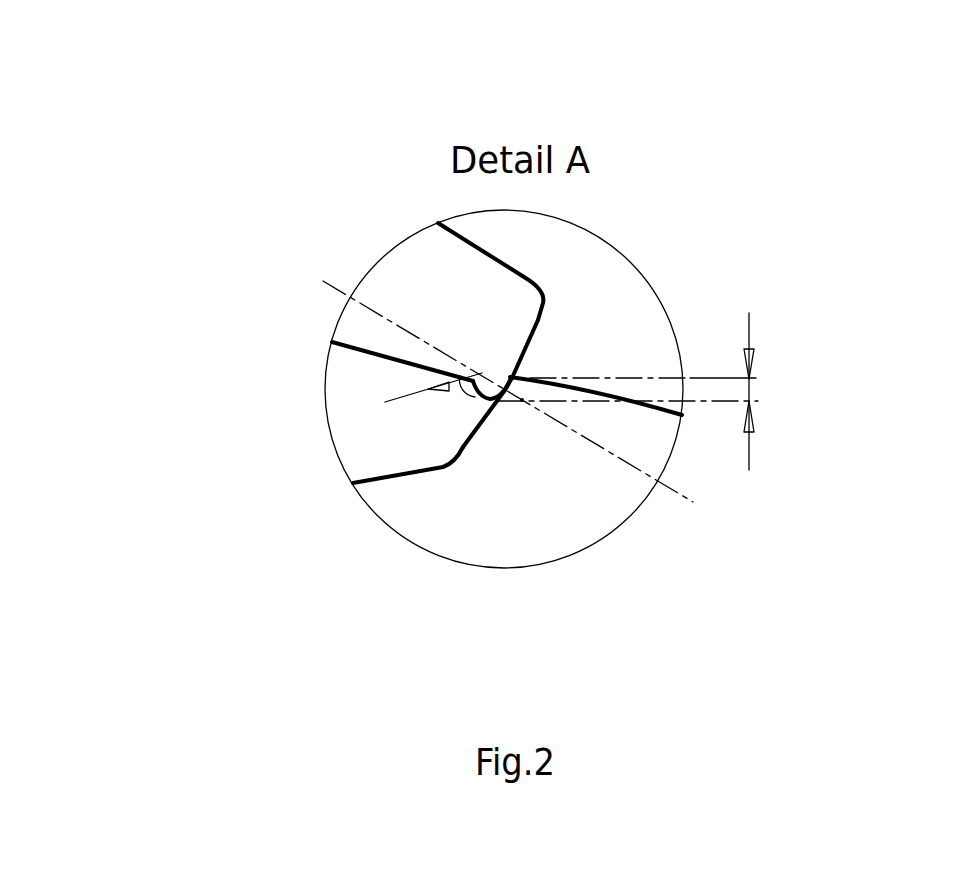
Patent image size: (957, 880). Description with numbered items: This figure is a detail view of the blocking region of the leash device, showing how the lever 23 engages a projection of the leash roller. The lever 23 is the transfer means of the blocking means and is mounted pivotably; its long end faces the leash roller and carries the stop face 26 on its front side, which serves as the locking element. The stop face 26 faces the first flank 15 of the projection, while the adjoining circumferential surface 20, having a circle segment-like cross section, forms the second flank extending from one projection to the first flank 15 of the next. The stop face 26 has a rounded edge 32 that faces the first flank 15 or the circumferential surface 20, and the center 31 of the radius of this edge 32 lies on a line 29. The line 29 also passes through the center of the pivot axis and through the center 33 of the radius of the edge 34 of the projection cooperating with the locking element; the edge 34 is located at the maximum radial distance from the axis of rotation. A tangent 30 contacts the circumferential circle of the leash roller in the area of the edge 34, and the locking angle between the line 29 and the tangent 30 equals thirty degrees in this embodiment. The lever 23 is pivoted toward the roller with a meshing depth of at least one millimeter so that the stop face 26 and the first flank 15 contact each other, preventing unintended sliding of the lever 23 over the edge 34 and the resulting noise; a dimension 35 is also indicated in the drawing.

The first flank 15 is at (461, 442).
The circumferential surface 20 is at (390, 473).
The lever 23 is at (438, 268).
The stop face 26 is at (540, 320).
The line 29 is at (323, 281).
The tangent 30 is at (697, 378).
The center of a radius of an edge of lever 31 is at (482, 373).
The edge of lever 32 is at (473, 400).
The center of a radius of an edge of the projection 33 is at (522, 400).
The edge of the projection 34 is at (528, 376).
The offset 35 is at (749, 393).